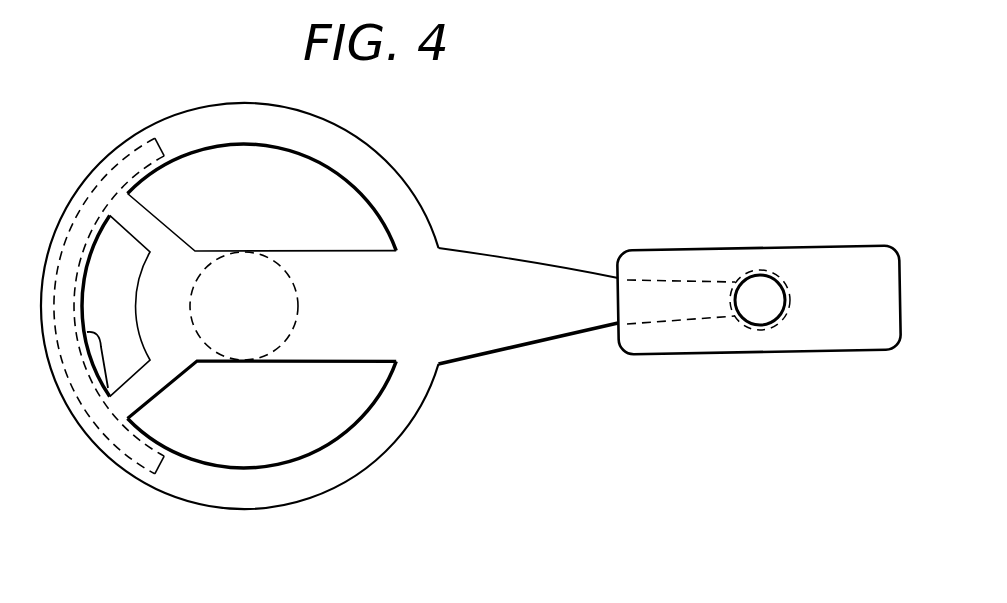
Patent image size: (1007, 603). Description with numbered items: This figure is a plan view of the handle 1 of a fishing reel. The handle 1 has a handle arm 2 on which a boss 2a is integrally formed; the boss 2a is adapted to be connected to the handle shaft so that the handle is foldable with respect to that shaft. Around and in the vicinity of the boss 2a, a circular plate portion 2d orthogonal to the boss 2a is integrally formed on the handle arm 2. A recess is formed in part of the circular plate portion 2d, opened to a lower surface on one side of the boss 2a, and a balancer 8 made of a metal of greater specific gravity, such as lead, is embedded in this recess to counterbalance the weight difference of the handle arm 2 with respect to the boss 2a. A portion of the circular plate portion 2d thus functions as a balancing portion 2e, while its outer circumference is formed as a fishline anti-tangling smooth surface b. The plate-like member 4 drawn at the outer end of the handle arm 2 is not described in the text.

The handle 1 is at (572, 192).
The handle arm 2 is at (492, 254).
The boss 2a is at (289, 338).
The circular plate portion 2d is at (380, 160).
The balancing portion 2e is at (100, 342).
The mounting plate 4 is at (702, 258).
The balancer 8 is at (93, 182).
The fishline anti-tangling smooth surface b is at (122, 148).